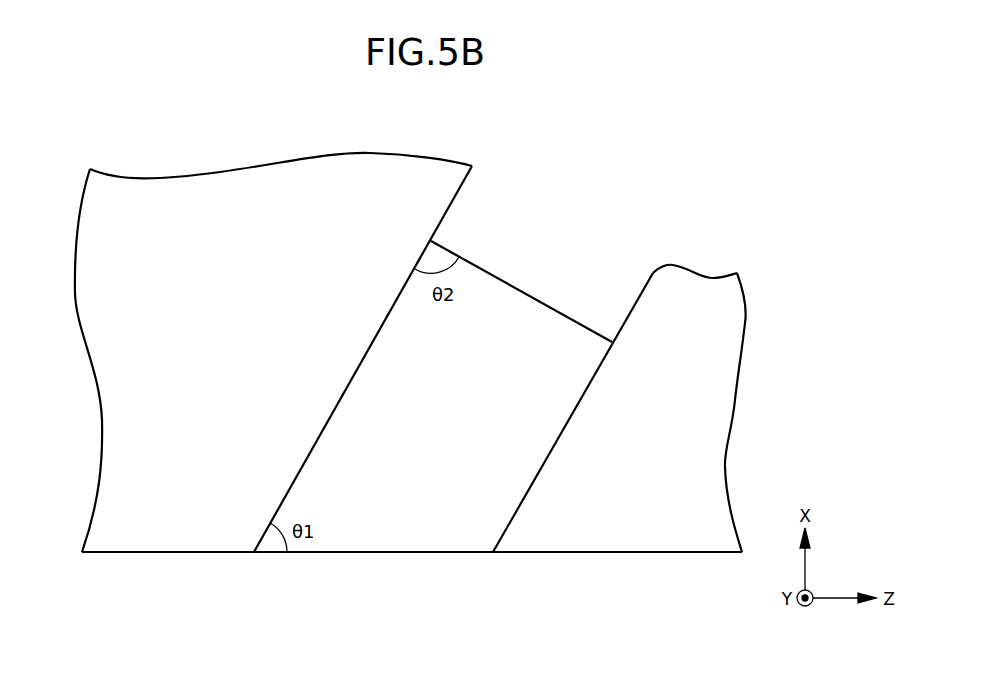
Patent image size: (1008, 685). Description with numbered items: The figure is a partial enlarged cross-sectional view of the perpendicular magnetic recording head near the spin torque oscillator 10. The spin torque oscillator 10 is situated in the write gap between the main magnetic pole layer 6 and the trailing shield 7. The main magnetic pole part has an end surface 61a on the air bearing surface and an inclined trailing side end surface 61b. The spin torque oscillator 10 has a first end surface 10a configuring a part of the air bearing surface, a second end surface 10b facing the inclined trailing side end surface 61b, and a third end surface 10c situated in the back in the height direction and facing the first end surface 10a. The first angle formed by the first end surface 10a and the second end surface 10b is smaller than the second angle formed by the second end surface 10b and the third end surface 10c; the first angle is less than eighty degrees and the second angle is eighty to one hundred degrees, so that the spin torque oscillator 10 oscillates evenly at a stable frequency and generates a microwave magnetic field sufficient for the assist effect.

The main magnetic pole layer 6 is at (197, 505).
The end surface 61a is at (145, 552).
The trailing side end surface 61b is at (453, 208).
The spin torque oscillator 10 is at (448, 518).
The first end surface 10a is at (373, 552).
The second end surface 10b is at (312, 458).
The third end surface 10c is at (547, 303).
The trailing shield 7 is at (643, 517).